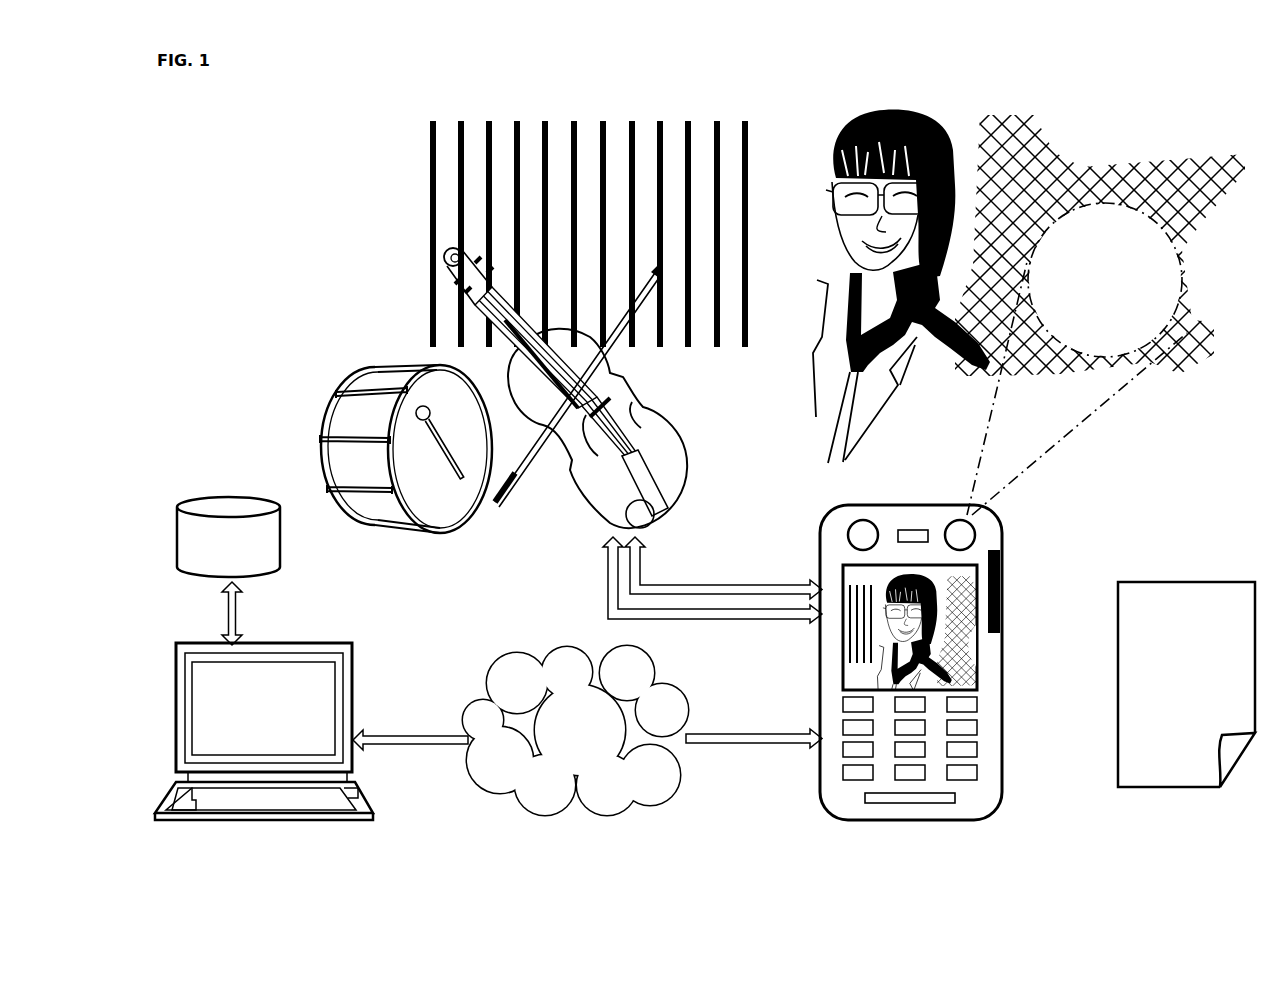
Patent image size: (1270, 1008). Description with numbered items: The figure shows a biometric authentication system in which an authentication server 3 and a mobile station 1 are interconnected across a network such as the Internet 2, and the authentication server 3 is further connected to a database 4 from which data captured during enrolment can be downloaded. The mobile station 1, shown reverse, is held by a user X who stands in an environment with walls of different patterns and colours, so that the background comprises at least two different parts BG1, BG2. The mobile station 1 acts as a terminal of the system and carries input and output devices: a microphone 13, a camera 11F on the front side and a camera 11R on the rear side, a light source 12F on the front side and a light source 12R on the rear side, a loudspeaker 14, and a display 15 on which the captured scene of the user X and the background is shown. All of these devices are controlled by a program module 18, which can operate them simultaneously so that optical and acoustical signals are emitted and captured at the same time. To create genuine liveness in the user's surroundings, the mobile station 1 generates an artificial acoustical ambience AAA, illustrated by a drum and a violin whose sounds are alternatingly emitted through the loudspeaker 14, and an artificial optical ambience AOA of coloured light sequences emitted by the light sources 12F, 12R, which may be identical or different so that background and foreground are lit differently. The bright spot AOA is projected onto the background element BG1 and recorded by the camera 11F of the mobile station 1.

The mobile station 1 is at (993, 666).
The Internet 2 is at (575, 730).
The authentication server 3 is at (264, 731).
The database 4 is at (228, 537).
The camera on the front side 11F is at (875, 505).
The camera on the rear side 11R is at (863, 533).
The light source on the front side 12F is at (1018, 576).
The light source on the rear side 12R is at (962, 536).
The microphone 13 is at (902, 798).
The loudspeaker 14 is at (918, 533).
The display 15 is at (963, 663).
The program module 18 is at (1186, 684).
The background element BG1 is at (1188, 330).
The background part BG2 is at (483, 148).
The artificial optical ambience AOA is at (1108, 320).
The artificial acoustical ambience AAA is at (510, 498).
The user X is at (892, 286).